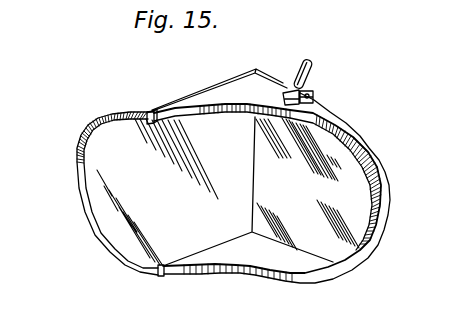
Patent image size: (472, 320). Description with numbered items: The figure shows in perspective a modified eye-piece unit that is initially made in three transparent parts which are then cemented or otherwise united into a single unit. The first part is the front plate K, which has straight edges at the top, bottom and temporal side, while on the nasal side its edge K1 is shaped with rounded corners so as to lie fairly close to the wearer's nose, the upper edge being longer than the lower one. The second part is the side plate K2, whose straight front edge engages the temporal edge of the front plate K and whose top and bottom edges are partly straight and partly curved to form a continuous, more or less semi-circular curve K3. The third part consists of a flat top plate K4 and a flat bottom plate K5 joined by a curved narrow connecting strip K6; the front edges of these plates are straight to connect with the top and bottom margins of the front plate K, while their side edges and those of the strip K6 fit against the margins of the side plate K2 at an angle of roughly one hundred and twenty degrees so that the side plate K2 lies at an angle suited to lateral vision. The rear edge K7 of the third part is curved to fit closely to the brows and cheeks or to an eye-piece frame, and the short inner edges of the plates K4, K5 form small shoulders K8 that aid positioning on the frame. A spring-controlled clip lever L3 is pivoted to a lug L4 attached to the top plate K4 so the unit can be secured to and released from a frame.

The front plate K is at (102, 150).
The nasal edge K1 is at (85, 207).
The side plate K2 is at (327, 172).
The semi-circular curve K3 is at (387, 178).
The top plate K4 is at (233, 88).
The bottom plate K5 is at (242, 255).
The connecting strip K6 is at (378, 202).
The rear edge K7 is at (316, 133).
The shoulders K8 is at (148, 288).
The clip lever L3 is at (313, 63).
The lug L4 is at (322, 92).